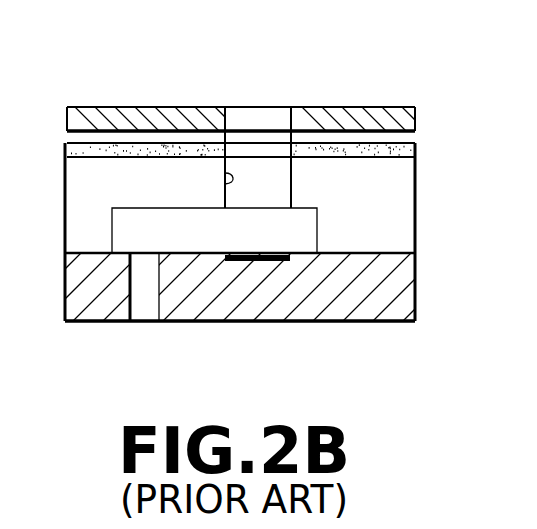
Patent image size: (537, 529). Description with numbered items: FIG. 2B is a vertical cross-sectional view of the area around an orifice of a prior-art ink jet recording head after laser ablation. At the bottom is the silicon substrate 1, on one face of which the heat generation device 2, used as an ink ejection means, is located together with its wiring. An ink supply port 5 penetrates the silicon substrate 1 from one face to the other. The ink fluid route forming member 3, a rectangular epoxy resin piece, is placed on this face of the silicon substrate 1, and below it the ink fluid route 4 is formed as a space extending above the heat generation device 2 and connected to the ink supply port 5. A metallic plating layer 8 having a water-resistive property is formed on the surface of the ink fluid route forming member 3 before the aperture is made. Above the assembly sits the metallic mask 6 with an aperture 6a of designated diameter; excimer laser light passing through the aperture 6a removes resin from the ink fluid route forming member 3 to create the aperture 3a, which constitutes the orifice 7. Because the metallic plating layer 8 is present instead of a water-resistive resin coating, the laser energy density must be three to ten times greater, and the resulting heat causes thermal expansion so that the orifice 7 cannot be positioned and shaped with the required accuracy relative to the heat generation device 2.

The silicon substrate 1 is at (391, 309).
The heat generation device 2 is at (253, 262).
The ink fluid route forming member 3 is at (407, 210).
The aperture 3a is at (225, 184).
The ink fluid route 4 is at (310, 228).
The ink supply port 5 is at (151, 306).
The metallic mask 6 is at (381, 120).
The aperture of the metallic mask 6a is at (291, 121).
The orifice 7 is at (250, 152).
The metallic plating layer 8 is at (417, 152).